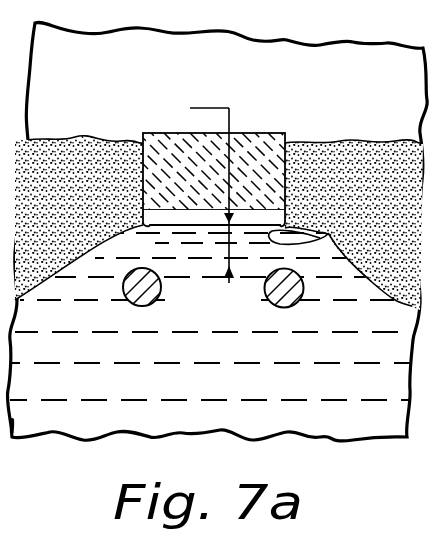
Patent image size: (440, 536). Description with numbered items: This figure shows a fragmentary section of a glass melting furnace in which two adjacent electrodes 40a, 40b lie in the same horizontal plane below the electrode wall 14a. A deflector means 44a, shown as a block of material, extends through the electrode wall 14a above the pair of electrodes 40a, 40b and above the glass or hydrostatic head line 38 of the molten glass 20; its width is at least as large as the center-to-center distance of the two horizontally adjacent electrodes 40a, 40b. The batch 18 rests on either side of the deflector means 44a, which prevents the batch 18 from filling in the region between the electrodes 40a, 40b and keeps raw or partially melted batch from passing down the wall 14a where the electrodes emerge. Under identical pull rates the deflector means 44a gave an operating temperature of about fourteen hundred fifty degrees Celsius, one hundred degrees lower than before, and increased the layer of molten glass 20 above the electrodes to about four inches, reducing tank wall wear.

The electrode wall 14a is at (233, 96).
The deflector means 44a is at (268, 133).
The batch 18 is at (88, 186).
The molten glass 20 is at (229, 408).
The glass or hydrostatic head line 38 is at (320, 238).
The electrode 40a is at (135, 300).
The electrode 40b is at (282, 308).